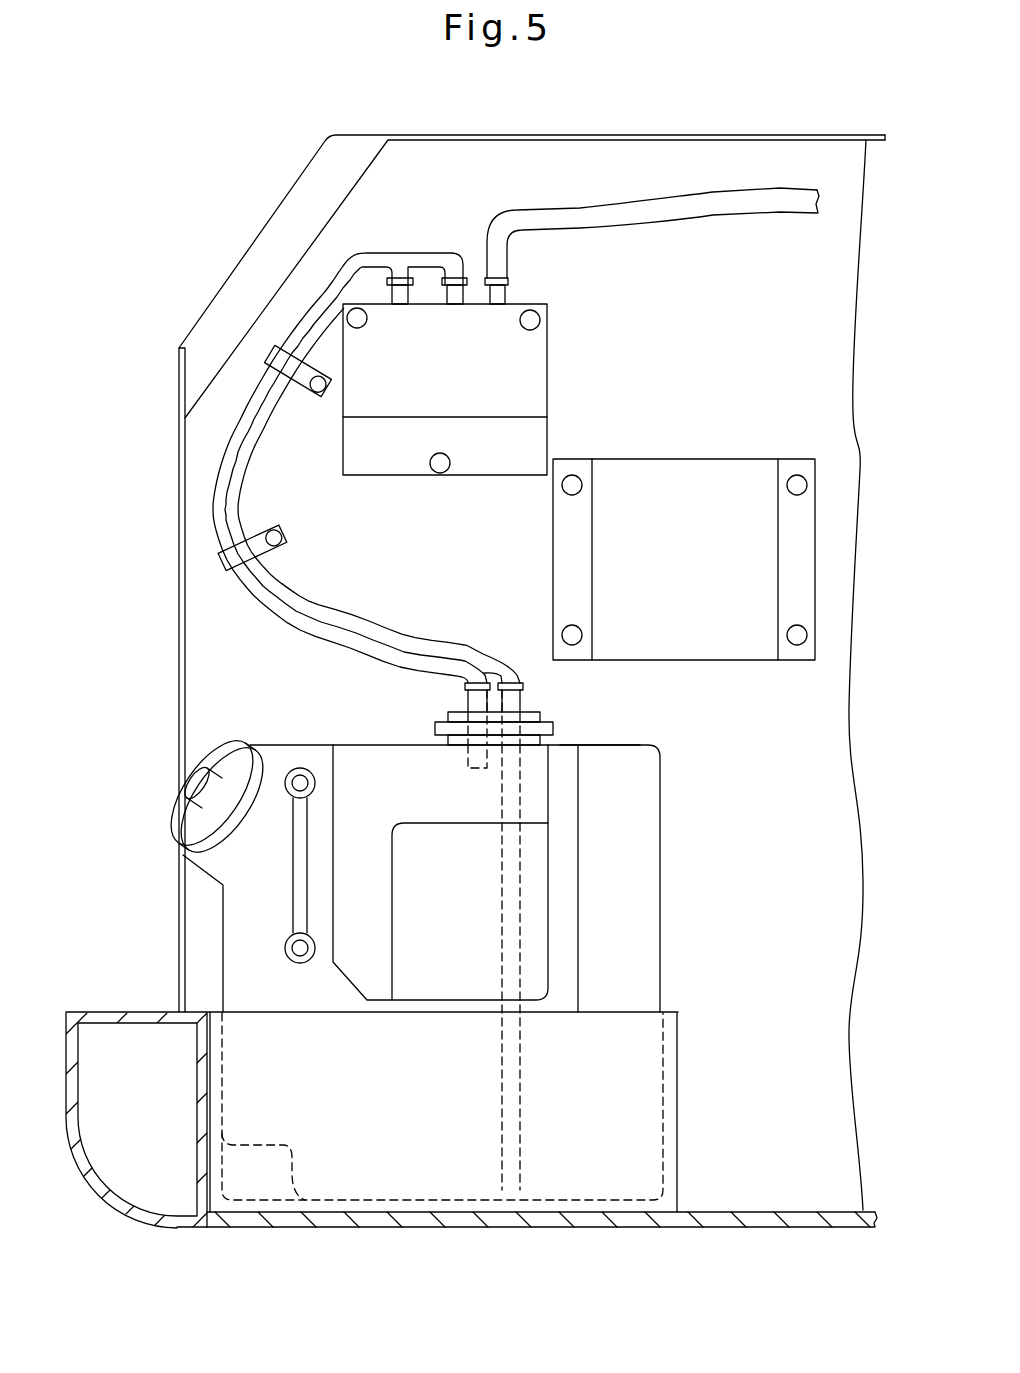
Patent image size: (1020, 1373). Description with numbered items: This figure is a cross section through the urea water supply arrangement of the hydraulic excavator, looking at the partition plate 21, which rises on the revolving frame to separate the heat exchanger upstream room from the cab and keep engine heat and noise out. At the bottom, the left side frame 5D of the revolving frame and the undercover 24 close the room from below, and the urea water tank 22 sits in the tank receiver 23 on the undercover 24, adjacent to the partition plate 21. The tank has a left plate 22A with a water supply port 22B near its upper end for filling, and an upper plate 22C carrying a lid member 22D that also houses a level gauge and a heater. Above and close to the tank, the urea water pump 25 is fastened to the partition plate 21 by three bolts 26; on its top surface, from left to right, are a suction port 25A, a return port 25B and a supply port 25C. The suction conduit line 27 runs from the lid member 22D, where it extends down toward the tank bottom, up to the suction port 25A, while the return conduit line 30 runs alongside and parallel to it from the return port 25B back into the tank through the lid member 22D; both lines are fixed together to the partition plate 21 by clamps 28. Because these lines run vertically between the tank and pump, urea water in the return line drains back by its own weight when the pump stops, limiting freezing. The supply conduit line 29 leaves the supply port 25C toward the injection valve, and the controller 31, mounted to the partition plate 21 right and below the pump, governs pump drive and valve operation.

The partition plate 21 is at (592, 173).
The urea water tank 22 is at (430, 936).
The left plate 22A is at (222, 915).
The water supply port 22B is at (188, 802).
The upper plate 22C is at (588, 743).
The lid member 22D is at (442, 722).
The tank receiver 23 is at (380, 1083).
The undercover 24 is at (588, 1218).
The urea water pump 25 is at (487, 378).
The suction port 25A is at (400, 293).
The return port 25B is at (453, 293).
The supply port 25C is at (507, 293).
The bolt 26 is at (350, 310).
The suction conduit line 27 is at (325, 468).
The clamp 28 is at (293, 363).
The supply conduit line 29 is at (728, 203).
The return conduit line 30 is at (233, 440).
The controller 31 is at (678, 530).
The left side frame 5D is at (121, 1200).